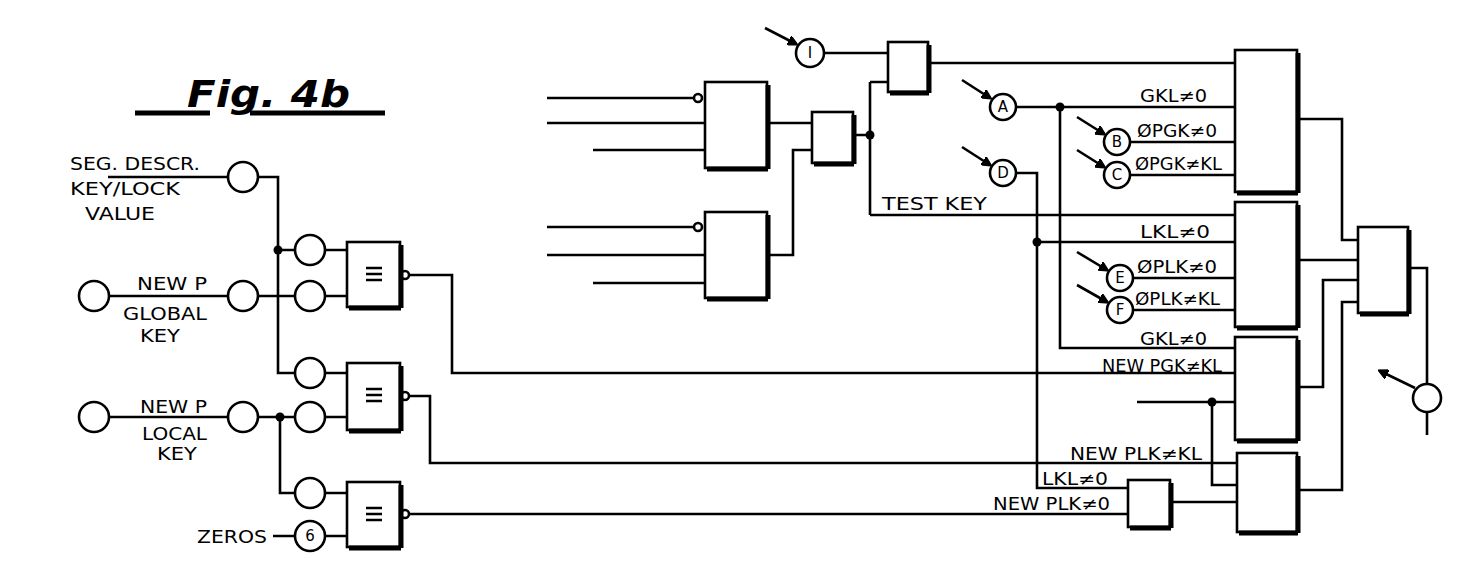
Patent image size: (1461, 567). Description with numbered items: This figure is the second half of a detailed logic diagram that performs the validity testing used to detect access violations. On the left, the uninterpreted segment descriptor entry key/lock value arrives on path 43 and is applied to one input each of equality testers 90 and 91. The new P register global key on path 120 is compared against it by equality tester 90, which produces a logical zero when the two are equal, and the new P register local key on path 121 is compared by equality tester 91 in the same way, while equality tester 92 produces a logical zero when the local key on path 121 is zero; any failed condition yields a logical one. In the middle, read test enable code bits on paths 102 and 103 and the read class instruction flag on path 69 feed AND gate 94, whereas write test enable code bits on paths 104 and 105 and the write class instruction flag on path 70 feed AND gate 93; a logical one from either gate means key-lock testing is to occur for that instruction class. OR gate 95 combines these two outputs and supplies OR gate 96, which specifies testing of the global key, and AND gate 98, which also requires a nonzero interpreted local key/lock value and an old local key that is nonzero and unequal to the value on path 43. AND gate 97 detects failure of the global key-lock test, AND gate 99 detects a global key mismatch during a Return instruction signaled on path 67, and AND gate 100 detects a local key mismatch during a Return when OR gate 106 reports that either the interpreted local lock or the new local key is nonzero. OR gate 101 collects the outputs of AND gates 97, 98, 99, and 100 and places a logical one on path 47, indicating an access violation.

The path 43 is at (278, 213).
The path 47 is at (1427, 340).
The path 67 is at (1163, 404).
The path 69 is at (613, 152).
The path 70 is at (617, 285).
The equality tester 90 is at (372, 242).
The equality tester 91 is at (370, 363).
The equality tester 92 is at (372, 482).
The AND gate 93 is at (723, 300).
The AND gate 94 is at (725, 82).
The OR gate 95 is at (825, 165).
The OR gate 96 is at (903, 92).
The AND gate 97 is at (1297, 83).
The AND gate 98 is at (1297, 228).
The AND gate 99 is at (1297, 410).
The AND gate 100 is at (1298, 508).
The OR gate 101 is at (1377, 227).
The path 102 is at (667, 96).
The path 103 is at (565, 124).
The path 104 is at (667, 225).
The path 105 is at (570, 257).
The OR gate 106 is at (1145, 527).
The path 120 is at (107, 283).
The path 121 is at (108, 405).